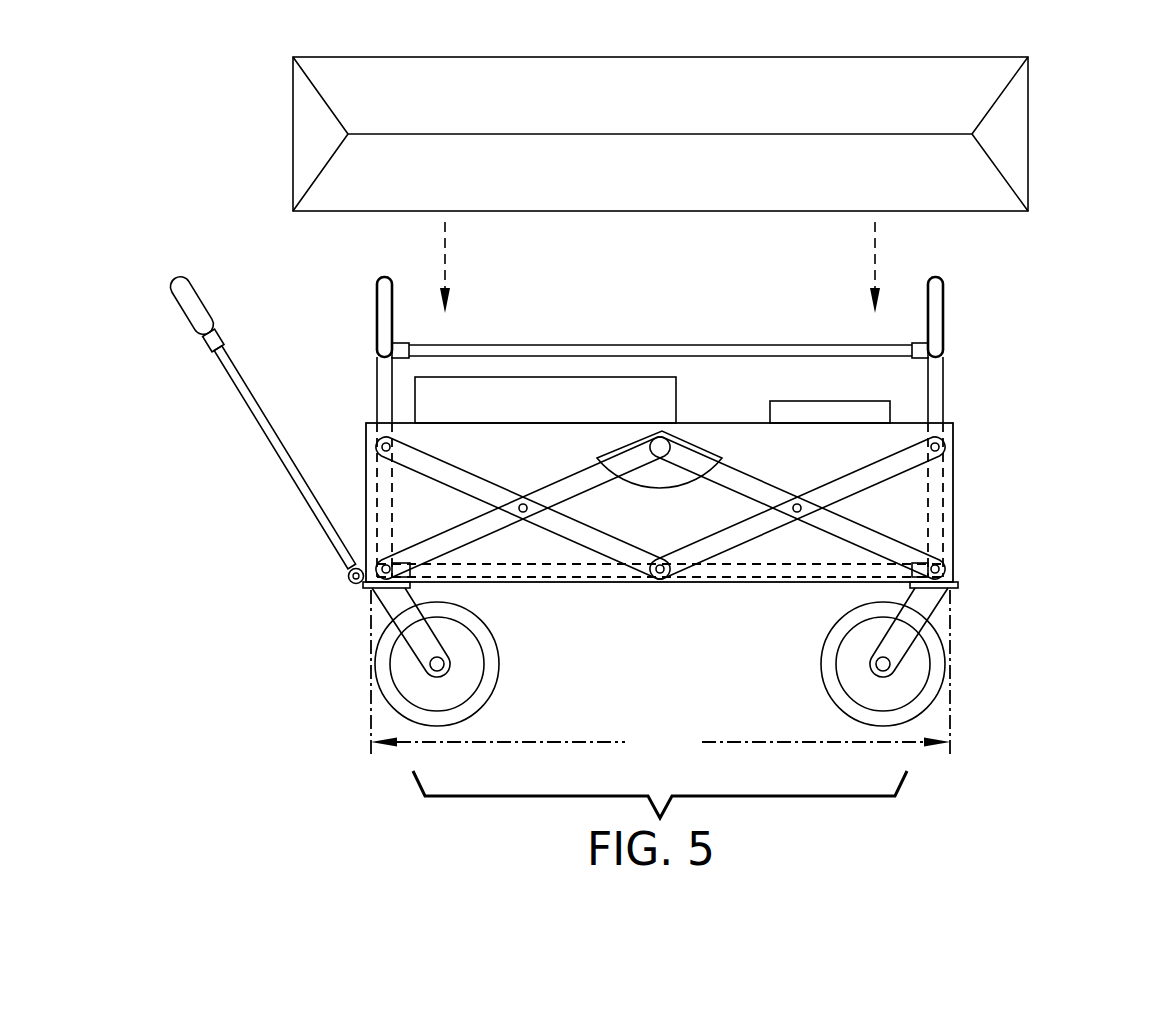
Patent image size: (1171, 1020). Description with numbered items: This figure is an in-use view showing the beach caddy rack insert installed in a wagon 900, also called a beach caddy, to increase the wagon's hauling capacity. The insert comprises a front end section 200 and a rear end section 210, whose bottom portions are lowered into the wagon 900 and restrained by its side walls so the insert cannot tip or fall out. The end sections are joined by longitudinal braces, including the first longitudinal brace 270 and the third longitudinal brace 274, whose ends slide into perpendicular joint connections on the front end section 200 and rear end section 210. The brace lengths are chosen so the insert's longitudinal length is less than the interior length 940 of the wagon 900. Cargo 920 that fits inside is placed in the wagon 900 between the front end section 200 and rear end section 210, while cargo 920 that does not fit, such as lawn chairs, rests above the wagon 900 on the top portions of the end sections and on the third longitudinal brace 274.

The front end section 200 is at (384, 310).
The rear end section 210 is at (933, 313).
The third longitudinal brace 274 is at (702, 352).
The first longitudinal brace 270 is at (763, 570).
The wagon 900 is at (958, 583).
The cargo 920 is at (1028, 147).
The interior length 940 is at (660, 675).